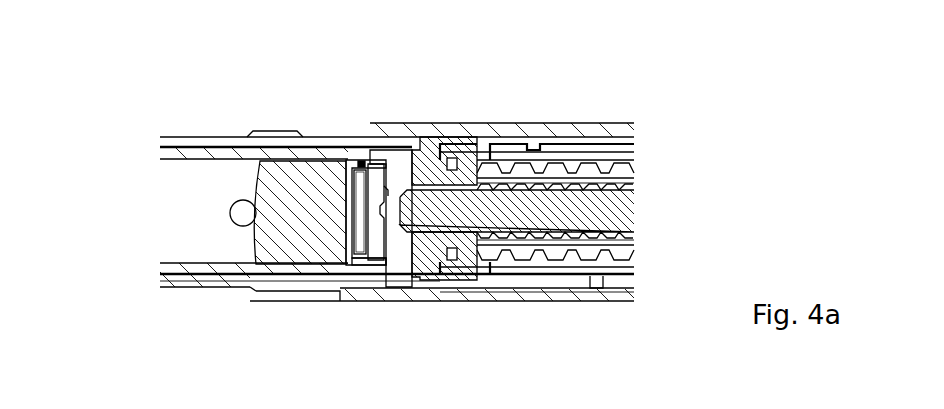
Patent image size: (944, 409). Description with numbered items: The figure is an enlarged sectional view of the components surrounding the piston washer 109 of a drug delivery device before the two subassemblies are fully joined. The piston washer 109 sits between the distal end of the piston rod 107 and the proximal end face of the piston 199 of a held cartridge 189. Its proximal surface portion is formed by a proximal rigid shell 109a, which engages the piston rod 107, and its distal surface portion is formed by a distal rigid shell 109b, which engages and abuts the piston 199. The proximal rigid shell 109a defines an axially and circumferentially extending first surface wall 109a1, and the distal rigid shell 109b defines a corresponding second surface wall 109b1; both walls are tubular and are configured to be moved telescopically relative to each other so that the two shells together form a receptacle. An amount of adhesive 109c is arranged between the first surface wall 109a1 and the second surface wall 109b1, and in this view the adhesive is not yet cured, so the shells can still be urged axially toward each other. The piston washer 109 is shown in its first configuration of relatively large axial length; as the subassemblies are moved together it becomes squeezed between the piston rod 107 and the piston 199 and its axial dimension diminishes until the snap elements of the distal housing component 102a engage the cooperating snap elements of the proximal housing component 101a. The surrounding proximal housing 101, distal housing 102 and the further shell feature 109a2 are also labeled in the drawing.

The housing 101 is at (597, 291).
The proximal housing component 101a is at (284, 292).
The outer sleeve 102 is at (172, 283).
The distal housing component 102a is at (255, 290).
The piston rod 107 is at (453, 212).
The piston washer 109 is at (369, 274).
The proximal rigid shell 109a is at (376, 210).
The first surface wall 109a1 is at (385, 190).
The retaining bracket 109a2 is at (430, 148).
The distal rigid shell 109b is at (348, 176).
The second surface wall 109b1 is at (351, 168).
The adhesive 109c is at (358, 165).
The cartridge 189 is at (200, 152).
The piston 199 is at (310, 220).